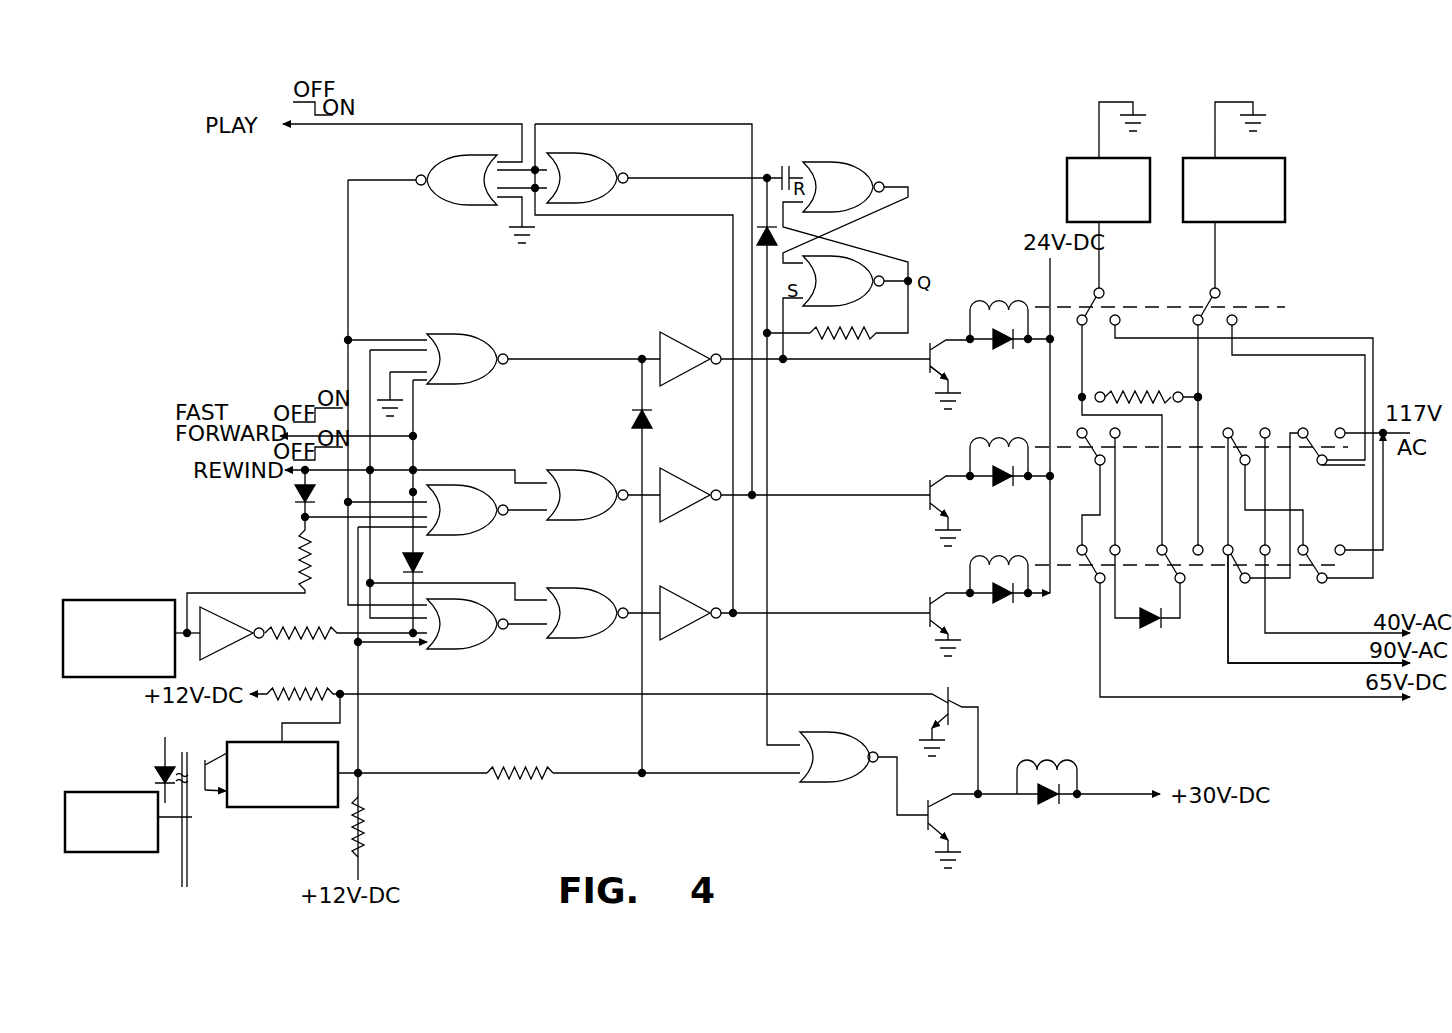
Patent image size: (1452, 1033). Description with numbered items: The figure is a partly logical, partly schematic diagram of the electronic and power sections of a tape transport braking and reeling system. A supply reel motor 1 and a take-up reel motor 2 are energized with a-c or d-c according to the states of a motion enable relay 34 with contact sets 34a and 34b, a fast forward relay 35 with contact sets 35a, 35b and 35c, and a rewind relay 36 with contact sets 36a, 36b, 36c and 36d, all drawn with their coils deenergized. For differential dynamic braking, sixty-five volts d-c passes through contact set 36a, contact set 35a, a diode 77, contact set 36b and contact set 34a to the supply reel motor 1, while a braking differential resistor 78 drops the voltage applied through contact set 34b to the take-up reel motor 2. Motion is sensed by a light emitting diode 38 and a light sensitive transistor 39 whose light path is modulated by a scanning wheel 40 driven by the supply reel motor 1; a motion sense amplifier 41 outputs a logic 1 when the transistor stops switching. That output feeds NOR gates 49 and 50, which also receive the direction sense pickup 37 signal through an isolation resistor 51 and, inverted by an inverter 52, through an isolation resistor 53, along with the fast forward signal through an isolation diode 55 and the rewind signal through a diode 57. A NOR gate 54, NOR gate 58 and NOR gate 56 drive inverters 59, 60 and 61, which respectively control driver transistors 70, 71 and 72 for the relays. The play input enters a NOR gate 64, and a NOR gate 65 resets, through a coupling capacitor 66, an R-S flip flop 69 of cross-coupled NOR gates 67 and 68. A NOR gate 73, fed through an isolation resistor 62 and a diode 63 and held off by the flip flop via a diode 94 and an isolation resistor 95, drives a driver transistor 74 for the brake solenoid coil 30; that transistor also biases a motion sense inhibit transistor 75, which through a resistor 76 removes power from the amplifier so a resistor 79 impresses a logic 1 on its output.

The supply reel motor 1 is at (1067, 195).
The take-up reel motor 2 is at (1285, 200).
The brake solenoid coil 30 is at (1050, 760).
The motion enable relay 34 is at (1010, 298).
The contact set 34a is at (1104, 292).
The contact set 34b is at (1220, 292).
The fast forward relay 35 is at (1012, 430).
The contact set 35a is at (1086, 450).
The contact set 35b is at (1256, 405).
The contact set 35c is at (1331, 410).
The rewind relay 36 is at (1017, 547).
The contact set 36a is at (1095, 580).
The contact set 36b is at (1172, 572).
The contact set 36c is at (1232, 574).
The contact set 36d is at (1322, 583).
The direction sense pickup 37 is at (112, 600).
The light emitting diode 38 is at (152, 775).
The light sensitive transistor 39 is at (218, 752).
The scanning wheel 40 is at (188, 830).
The motion sense amplifier 41 is at (272, 808).
The NOR gate 49 is at (480, 648).
The NOR gate 50 is at (480, 535).
The isolation resistor 51 is at (300, 557).
The inverter 52 is at (232, 622).
The isolation resistor 53 is at (302, 642).
The NOR gate 54 is at (468, 334).
The isolation diode 55 is at (428, 563).
The NOR gate 56 is at (585, 588).
The diode 57 is at (292, 495).
The NOR gate 58 is at (577, 470).
The inverter 59 is at (675, 332).
The inverter 60 is at (690, 470).
The inverter 61 is at (683, 590).
The isolation resistor 62 is at (527, 765).
The diode 63 is at (655, 420).
The NOR gate 64 is at (466, 155).
The NOR gate 65 is at (613, 160).
The coupling capacitor 66 is at (785, 165).
The NOR gate 67 is at (852, 163).
The NOR gate 68 is at (860, 304).
The R-S flip flop 69 is at (958, 237).
The driver transistor 70 is at (947, 340).
The driver transistor 71 is at (940, 475).
The driver transistor 72 is at (940, 593).
The NOR gate 73 is at (838, 733).
The driver transistor 74 is at (935, 800).
The motion sense inhibit transistor 75 is at (950, 693).
The resistor 76 is at (298, 690).
The diode 77 is at (1150, 628).
The braking differential resistor 78 is at (1135, 392).
The resistor 79 is at (365, 812).
The diode 94 is at (757, 236).
The isolation resistor 95 is at (862, 340).